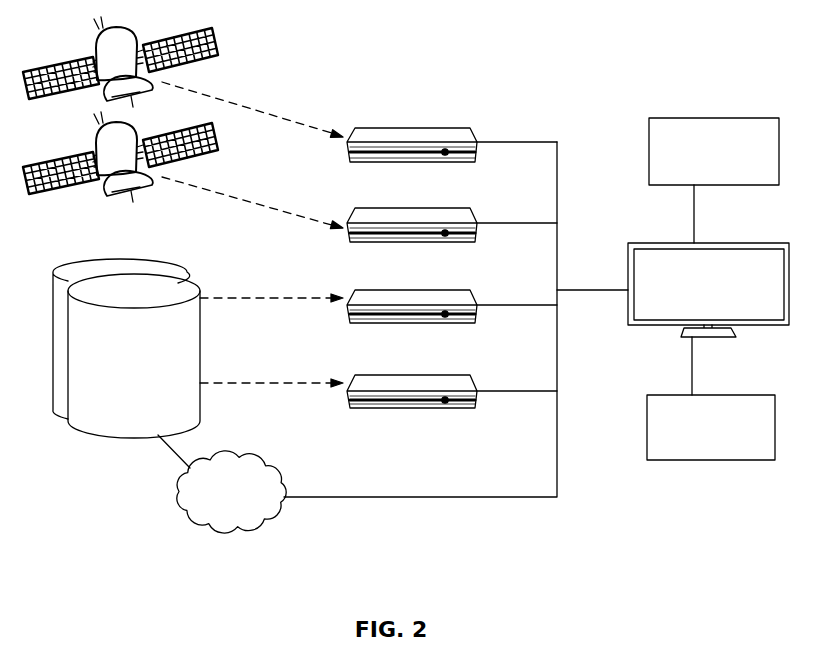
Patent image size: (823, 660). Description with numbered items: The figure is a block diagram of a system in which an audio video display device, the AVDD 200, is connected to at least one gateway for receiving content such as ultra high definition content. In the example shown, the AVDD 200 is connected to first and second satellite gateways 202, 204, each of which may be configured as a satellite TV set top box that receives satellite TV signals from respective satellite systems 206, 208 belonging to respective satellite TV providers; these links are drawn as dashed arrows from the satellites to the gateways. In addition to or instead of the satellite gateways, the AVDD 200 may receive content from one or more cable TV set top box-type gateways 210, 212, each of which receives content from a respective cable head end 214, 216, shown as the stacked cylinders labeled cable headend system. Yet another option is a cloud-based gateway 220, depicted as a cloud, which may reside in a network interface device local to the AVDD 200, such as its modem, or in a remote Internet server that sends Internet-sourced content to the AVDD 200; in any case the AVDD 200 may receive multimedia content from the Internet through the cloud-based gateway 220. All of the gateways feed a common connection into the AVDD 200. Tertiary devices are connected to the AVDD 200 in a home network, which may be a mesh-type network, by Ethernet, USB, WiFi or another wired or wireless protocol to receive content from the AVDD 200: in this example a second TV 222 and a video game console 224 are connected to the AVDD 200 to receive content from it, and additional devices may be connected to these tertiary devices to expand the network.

The AVDD 200 is at (724, 243).
The first satellite gateway 202 is at (447, 128).
The second satellite gateway 204 is at (447, 208).
The satellite system 206 is at (218, 40).
The satellite system 208 is at (218, 135).
The cable TV set top box-type gateway 210 is at (415, 410).
The cable TV set top box-type gateway 212 is at (447, 290).
The cable head end 214 is at (201, 350).
The cable head end 216 is at (162, 268).
The cloud-based gateway 220 is at (270, 464).
The second TV 222 is at (726, 118).
The video game console 224 is at (720, 395).